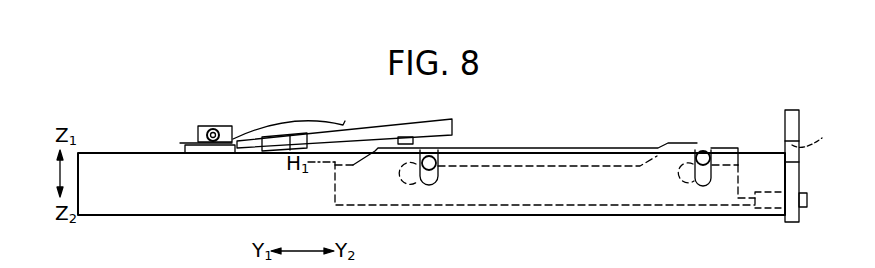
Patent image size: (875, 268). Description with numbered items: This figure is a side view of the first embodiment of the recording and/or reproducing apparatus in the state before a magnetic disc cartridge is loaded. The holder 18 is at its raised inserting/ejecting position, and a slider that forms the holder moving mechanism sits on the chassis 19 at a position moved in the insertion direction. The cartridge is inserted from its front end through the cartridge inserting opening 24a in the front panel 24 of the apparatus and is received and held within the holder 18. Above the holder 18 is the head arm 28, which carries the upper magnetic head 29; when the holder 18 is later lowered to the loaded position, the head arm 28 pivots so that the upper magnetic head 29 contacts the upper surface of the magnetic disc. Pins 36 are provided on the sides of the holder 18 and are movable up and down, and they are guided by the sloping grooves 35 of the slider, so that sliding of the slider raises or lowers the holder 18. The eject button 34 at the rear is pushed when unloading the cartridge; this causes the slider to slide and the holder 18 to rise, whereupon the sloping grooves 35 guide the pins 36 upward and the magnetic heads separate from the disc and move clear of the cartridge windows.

The holder 18 is at (552, 148).
The chassis 19 is at (164, 215).
The front panel 24 is at (792, 110).
The cartridge inserting opening 24a is at (825, 133).
The head arm 28 is at (372, 128).
The upper magnetic head 29 is at (410, 137).
The eject button 34 is at (808, 201).
The sloping grooves 35 is at (413, 184).
The pins 36 is at (435, 150).